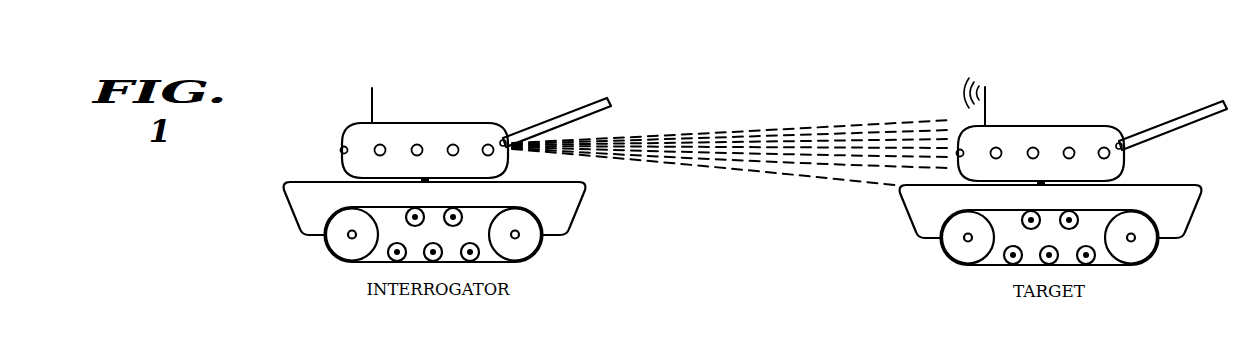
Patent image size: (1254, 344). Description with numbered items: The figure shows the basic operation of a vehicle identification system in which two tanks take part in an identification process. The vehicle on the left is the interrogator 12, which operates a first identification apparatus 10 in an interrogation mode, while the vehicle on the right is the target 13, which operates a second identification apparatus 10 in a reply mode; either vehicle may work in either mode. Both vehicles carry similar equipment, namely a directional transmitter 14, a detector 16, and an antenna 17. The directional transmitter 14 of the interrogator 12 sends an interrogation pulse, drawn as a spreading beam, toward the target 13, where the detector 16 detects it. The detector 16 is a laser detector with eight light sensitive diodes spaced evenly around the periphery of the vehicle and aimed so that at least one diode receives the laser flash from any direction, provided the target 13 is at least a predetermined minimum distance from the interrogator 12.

The identification apparatus 10 is at (364, 122).
The interrogator 12 is at (568, 228).
The target 13 is at (921, 224).
The directional transmitter 14 is at (503, 139).
The detector 16 is at (488, 144).
The antenna 17 is at (372, 88).